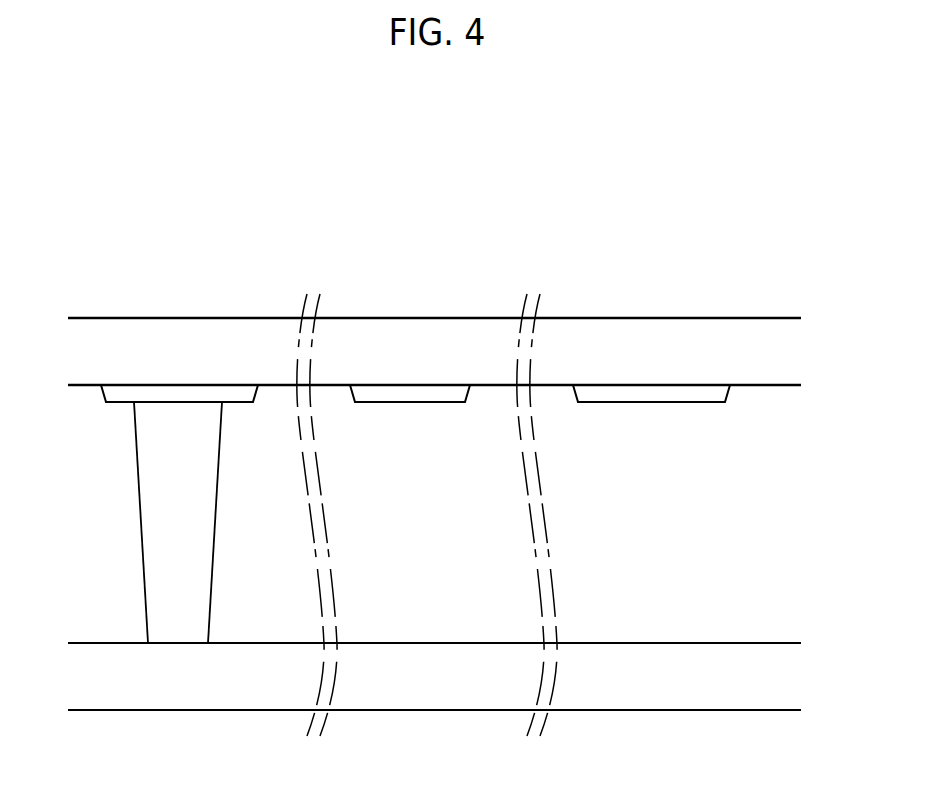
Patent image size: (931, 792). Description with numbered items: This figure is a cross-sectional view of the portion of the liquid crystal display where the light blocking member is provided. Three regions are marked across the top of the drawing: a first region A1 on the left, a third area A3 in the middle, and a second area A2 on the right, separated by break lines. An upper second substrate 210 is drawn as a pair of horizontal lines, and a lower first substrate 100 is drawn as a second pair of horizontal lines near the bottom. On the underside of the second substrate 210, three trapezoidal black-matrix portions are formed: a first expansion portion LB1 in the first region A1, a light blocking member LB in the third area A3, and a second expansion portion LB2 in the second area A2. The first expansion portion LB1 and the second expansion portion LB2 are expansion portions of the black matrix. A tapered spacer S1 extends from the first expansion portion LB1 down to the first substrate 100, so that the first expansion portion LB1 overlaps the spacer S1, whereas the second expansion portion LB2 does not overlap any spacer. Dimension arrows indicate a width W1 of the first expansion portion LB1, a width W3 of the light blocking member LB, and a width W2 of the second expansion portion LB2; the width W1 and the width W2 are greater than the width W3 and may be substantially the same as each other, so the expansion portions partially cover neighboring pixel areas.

The first substrate 100 is at (667, 690).
The second substrate 210 is at (583, 338).
The first expansion portion LB1 is at (218, 392).
The light blocking member LB is at (448, 392).
The second expansion portion LB2 is at (711, 392).
The spacer S1 is at (160, 511).
The first region A1 is at (68, 218).
The second area A2 is at (540, 218).
The third area A3 is at (320, 218).
The width of the first expansion portion W1 is at (258, 368).
The width of the second expansion portion W2 is at (573, 368).
The width of the light blocking member W3 is at (350, 368).